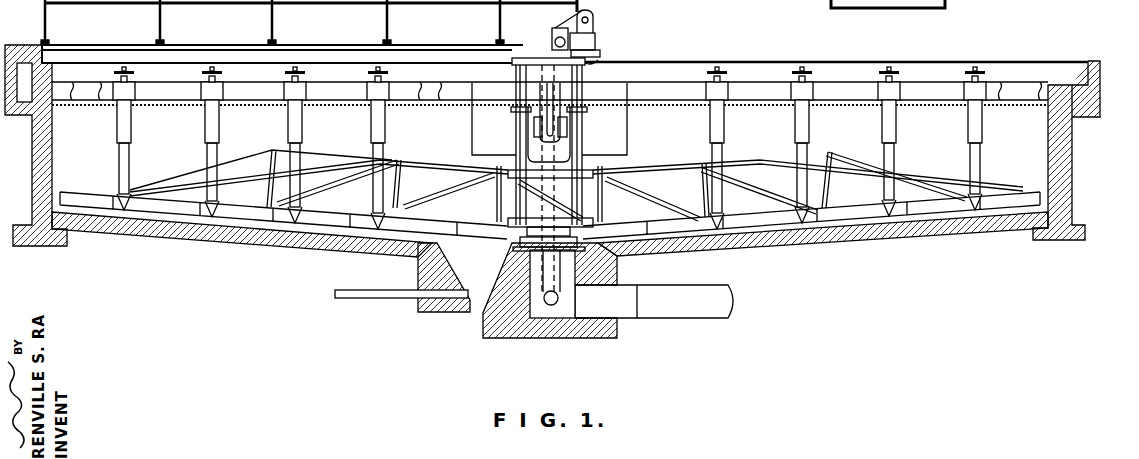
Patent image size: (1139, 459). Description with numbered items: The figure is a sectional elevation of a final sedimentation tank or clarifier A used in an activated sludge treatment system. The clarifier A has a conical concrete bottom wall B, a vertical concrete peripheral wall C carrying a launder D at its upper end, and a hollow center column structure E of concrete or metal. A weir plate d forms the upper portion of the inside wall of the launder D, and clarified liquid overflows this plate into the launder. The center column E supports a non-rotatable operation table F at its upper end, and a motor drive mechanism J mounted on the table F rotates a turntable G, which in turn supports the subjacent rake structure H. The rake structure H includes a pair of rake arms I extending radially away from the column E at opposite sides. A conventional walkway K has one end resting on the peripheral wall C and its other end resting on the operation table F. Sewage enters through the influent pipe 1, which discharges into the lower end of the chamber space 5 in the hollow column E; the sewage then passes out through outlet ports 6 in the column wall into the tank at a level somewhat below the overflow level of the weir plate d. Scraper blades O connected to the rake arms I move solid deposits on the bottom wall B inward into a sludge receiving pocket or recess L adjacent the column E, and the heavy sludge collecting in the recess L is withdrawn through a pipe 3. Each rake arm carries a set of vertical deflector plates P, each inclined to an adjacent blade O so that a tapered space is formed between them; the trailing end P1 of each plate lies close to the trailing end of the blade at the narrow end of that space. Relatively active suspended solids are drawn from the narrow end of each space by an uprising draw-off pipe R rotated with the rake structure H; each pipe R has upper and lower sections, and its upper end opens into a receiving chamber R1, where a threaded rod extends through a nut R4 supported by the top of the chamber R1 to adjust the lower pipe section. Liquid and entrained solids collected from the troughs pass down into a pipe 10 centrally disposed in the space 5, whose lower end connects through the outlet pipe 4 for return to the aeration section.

The final sedimentation tank or clarifier A is at (1004, 154).
The conical concrete bottom wall B is at (787, 245).
The vertical concrete peripheral wall C is at (1074, 148).
The launder D is at (1077, 88).
The weir plate d is at (1021, 93).
The hollow center column structure E is at (567, 198).
The operation table F is at (536, 58).
The turntable G is at (588, 65).
The rake structure H is at (517, 158).
The rake arms I is at (760, 207).
The motor drive mechanism J is at (595, 40).
The walkway K is at (285, 61).
The sludge receiving pocket or recess L is at (470, 263).
The scraper blades O is at (190, 210).
The vertical plates P is at (145, 209).
The trailing end of deflector plate P1 is at (362, 198).
The draw-off pipe R is at (207, 153).
The receiving chamber R1 is at (122, 93).
The nut R4 is at (728, 73).
The influent pipe 1 is at (692, 318).
The sludge outlet pipe 3 is at (382, 297).
The outlet pipe 4 is at (551, 304).
The chamber space 5 is at (627, 128).
The outlet ports 6 is at (567, 126).
The pipe 10 is at (537, 282).